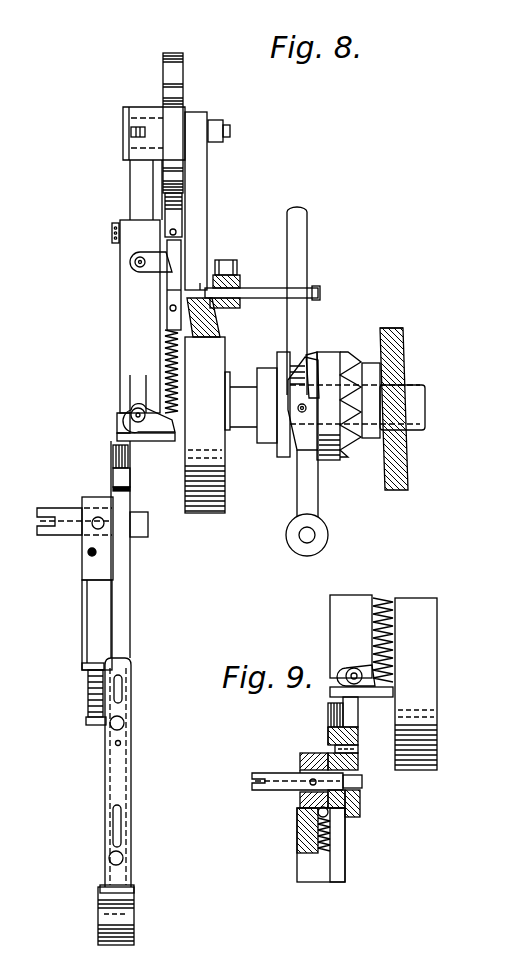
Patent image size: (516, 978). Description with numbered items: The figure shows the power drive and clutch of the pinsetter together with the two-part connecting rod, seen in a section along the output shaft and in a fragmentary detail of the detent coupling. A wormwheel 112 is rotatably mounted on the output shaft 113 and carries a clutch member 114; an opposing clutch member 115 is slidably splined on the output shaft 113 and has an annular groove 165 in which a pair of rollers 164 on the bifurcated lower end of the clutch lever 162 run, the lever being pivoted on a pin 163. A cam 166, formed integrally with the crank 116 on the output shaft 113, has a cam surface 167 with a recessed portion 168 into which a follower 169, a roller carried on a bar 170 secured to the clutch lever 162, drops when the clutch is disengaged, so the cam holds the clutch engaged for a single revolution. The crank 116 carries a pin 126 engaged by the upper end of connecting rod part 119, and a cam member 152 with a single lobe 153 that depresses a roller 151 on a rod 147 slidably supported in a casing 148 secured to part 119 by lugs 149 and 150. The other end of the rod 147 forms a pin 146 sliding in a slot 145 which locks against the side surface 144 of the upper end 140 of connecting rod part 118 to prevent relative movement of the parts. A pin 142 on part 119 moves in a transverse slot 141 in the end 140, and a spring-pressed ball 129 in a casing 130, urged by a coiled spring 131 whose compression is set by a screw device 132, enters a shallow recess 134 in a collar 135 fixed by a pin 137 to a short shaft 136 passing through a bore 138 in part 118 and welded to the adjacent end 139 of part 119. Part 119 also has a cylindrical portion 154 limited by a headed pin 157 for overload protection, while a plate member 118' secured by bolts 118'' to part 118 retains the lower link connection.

In FIG. 8, the wormwheel 112 is at (404, 327).
In FIG. 8, the output shaft 113 is at (415, 383).
In FIG. 8, the clutch member 114 is at (383, 327).
In FIG. 8, the opposing clutch member 115 is at (329, 350).
In FIG. 8, the crank 116 is at (196, 204).
In FIG. 8, the connecting rod part 118 is at (138, 693).
In FIG. 9, the connecting rod part 118 is at (357, 789).
In FIG. 8, the plate member 118' is at (145, 761).
In FIG. 8, the bolts 118'' is at (148, 787).
In FIG. 8, the connecting rod part 119 is at (120, 295).
In FIG. 9, the connecting rod part 119 is at (334, 612).
In FIG. 8, the pin 126 is at (141, 124).
In FIG. 8, the spring-pressed ball 129 is at (90, 553).
In FIG. 9, the spring-pressed ball 129 is at (318, 812).
In FIG. 8, the casing 130 is at (83, 628).
In FIG. 9, the casing 130 is at (297, 870).
In FIG. 9, the coiled spring 131 is at (297, 840).
In FIG. 8, the screw device 132 is at (97, 707).
In FIG. 9, the shallow recess 134 is at (300, 798).
In FIG. 8, the collar 135 is at (90, 497).
In FIG. 9, the collar 135 is at (328, 753).
In FIG. 8, the short shaft 136 is at (58, 508).
In FIG. 9, the short shaft 136 is at (264, 772).
In FIG. 9, the pin 137 is at (297, 768).
In FIG. 9, the bore 138 is at (348, 812).
In FIG. 9, the end of connecting rod part 139 is at (363, 781).
In FIG. 8, the upper end 140 is at (113, 467).
In FIG. 9, the upper end 140 is at (330, 708).
In FIG. 9, the transverse slot 141 is at (328, 722).
In FIG. 8, the pin 142 is at (148, 514).
In FIG. 9, the pin 142 is at (329, 742).
In FIG. 8, the side surface 144 is at (130, 463).
In FIG. 9, the side surface 144 is at (361, 692).
In FIG. 9, the slot 145 is at (358, 731).
In FIG. 8, the pin 146 is at (118, 425).
In FIG. 9, the pin 146 is at (356, 696).
In FIG. 8, the rod 147 is at (165, 355).
In FIG. 9, the rod 147 is at (383, 600).
In FIG. 8, the casing 148 is at (170, 300).
In FIG. 8, the lug 149 is at (132, 260).
In FIG. 8, the lug 150 is at (145, 400).
In FIG. 8, the roller 151 is at (181, 197).
In FIG. 8, the cam member 152 is at (172, 84).
In FIG. 8, the lobe 153 is at (186, 55).
In FIG. 8, the cylindrical portion 154 is at (130, 190).
In FIG. 8, the headed pin 157 is at (112, 230).
In FIG. 8, the clutch lever 162 is at (309, 219).
In FIG. 8, the pin 163 is at (312, 536).
In FIG. 8, the rollers 164 is at (297, 460).
In FIG. 8, the annular groove 165 is at (313, 356).
In FIG. 8, the cam 166 is at (219, 335).
In FIG. 9, the cam 166 is at (420, 772).
In FIG. 8, the cam surface 167 is at (224, 461).
In FIG. 8, the recessed portion 168 is at (200, 283).
In FIG. 8, the follower 169 is at (224, 262).
In FIG. 8, the bar 170 is at (261, 285).